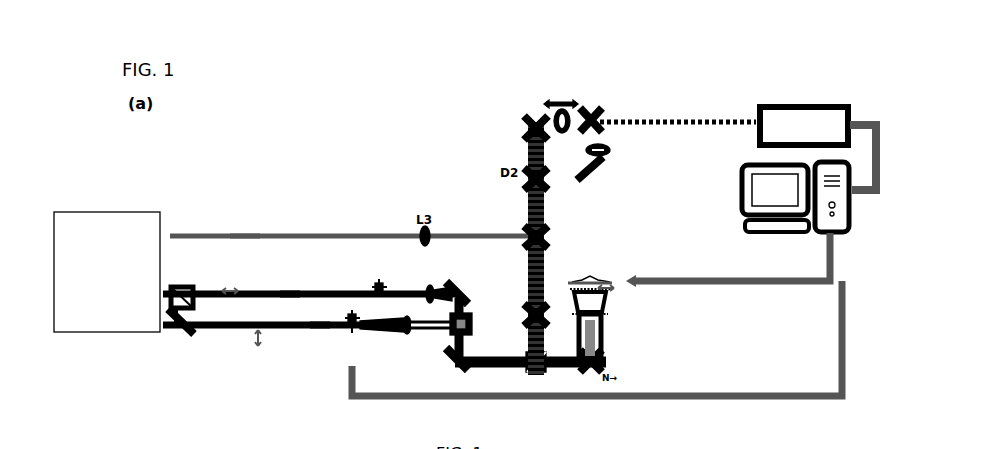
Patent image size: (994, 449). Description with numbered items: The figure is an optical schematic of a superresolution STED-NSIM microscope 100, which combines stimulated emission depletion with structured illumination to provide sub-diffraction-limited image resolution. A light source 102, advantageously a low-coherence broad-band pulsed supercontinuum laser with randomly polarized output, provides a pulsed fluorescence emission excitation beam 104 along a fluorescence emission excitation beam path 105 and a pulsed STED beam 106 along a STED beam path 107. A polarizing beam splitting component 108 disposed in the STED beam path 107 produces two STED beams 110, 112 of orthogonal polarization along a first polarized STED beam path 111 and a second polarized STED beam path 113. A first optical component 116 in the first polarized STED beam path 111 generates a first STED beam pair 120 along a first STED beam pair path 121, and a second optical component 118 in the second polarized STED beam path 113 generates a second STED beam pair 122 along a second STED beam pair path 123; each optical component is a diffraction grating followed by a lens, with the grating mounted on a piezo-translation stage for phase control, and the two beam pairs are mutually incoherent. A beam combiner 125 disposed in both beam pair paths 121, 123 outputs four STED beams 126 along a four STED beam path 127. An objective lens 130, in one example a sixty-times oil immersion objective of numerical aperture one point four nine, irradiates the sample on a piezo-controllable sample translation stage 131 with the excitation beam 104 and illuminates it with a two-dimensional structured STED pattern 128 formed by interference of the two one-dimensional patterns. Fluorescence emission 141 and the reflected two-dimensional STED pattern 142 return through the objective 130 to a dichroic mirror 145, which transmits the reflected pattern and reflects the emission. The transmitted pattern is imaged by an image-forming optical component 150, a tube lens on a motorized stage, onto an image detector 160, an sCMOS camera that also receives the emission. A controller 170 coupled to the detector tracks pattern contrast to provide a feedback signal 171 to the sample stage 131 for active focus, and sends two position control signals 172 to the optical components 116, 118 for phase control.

The superresolution STED-NSIM microscope 100 is at (615, 70).
The light source 102 is at (107, 272).
The fluorescence emission excitation beam 104 is at (191, 235).
The fluorescence emission excitation beam path 105 is at (241, 236).
The pulsed STED beam 106 is at (160, 300).
The STED beam path 107 is at (168, 318).
The polarizing beam splitting component 108 is at (200, 286).
The first STED beam 110 is at (256, 291).
The first polarized STED beam path 111 is at (293, 291).
The second STED beam 112 is at (267, 322).
The second polarized STED beam path 113 is at (322, 322).
The first optical component 116 is at (381, 284).
The second optical component 118 is at (354, 312).
The first STED beam pair 120 is at (441, 290).
The first STED beam pair path 121 is at (405, 332).
The second STED beam pair 122 is at (432, 333).
The second STED beam pair path 123 is at (448, 334).
The beam combiner 125 is at (474, 314).
The four STED beams 126 is at (482, 370).
The four STED beam path 127 is at (508, 372).
The 2D structured STED pattern 128 is at (604, 314).
The objective lens 130 is at (598, 330).
The piezo-controllable sample translation stage 131 is at (604, 280).
The fluorescence emission 141 is at (568, 186).
The reflected 2D STED pattern 142 is at (532, 140).
The dichroic mirror 145 is at (546, 236).
The image-forming optical component 150 is at (547, 112).
The image detector 160 is at (850, 120).
The controller 170 is at (852, 206).
The feedback signal 171 is at (800, 283).
The position control signals 172 is at (845, 326).